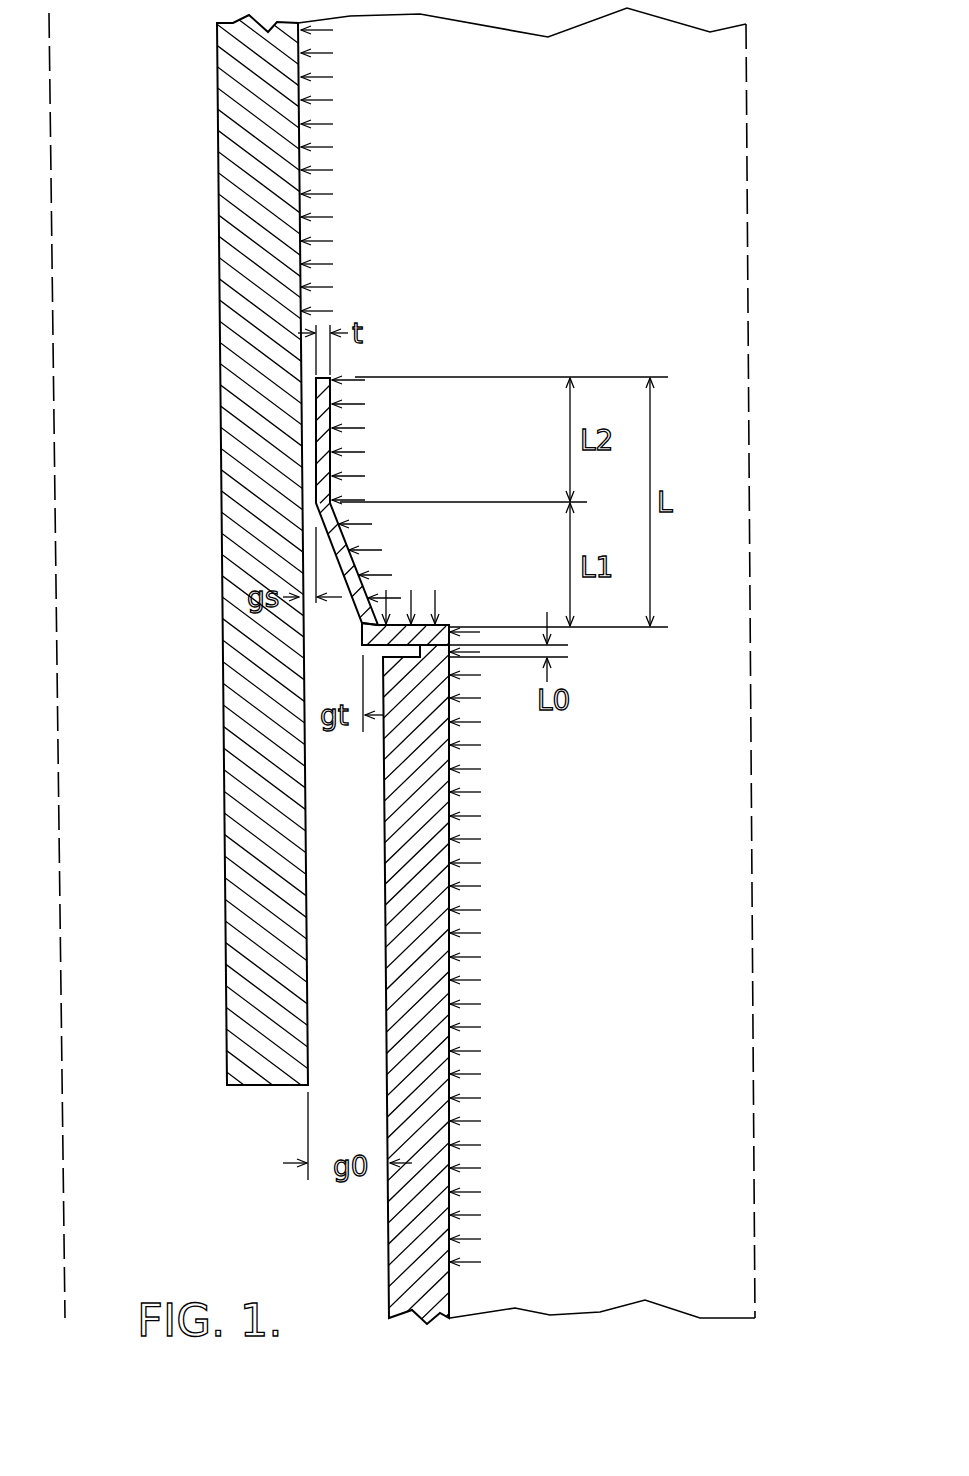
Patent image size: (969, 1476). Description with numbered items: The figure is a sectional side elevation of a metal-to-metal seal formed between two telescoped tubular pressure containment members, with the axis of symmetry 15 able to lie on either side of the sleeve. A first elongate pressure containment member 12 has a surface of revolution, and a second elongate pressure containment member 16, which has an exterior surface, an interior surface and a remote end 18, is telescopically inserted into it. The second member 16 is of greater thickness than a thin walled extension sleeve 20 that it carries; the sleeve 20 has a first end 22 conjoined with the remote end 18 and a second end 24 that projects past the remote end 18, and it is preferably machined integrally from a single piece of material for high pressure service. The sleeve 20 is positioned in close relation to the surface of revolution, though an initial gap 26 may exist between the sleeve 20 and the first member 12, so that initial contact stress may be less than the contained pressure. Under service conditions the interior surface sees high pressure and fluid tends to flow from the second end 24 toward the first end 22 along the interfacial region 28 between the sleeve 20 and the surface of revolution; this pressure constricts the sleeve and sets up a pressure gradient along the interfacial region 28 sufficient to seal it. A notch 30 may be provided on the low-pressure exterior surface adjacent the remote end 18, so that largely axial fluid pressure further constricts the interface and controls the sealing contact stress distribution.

The first elongate pressure containment member 12 is at (222, 850).
The boundary of structure 15 is at (62, 908).
The second elongate pressure containment member 16 is at (450, 1290).
The remote end 18 is at (425, 622).
The thin walled extension sleeve 20 is at (333, 446).
The first end 22 is at (362, 640).
The second end 24 is at (322, 378).
The gap 26 is at (312, 402).
The interfacial region 28 is at (312, 477).
The notch 30 is at (398, 652).